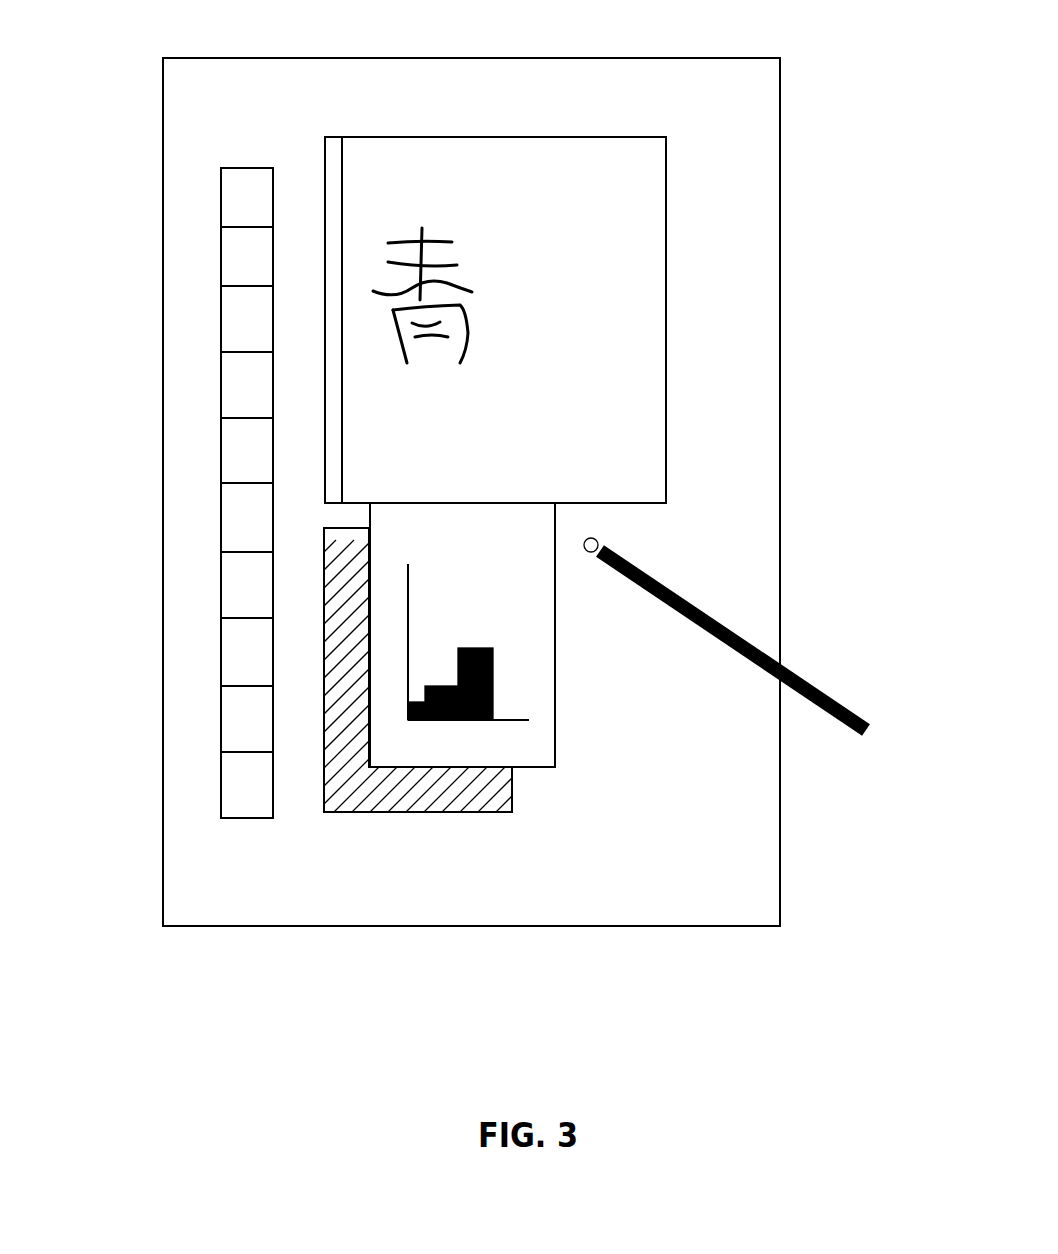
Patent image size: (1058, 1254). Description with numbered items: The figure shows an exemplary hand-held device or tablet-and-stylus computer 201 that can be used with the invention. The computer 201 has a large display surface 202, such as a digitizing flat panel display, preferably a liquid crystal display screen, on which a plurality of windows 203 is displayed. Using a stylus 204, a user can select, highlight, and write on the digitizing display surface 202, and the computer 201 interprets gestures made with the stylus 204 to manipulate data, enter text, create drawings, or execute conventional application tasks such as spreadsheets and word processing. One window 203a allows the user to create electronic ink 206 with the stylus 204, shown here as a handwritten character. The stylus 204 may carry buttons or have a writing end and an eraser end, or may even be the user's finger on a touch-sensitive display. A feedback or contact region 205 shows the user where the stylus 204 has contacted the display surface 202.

The hand-held device or tablet-and-stylus computer 201 is at (120, 805).
The display surface 202 is at (187, 493).
The windows 203 is at (352, 812).
The window 203a is at (630, 448).
The stylus 204 is at (819, 715).
The feedback region or contact region 205 is at (600, 543).
The electronic ink 206 is at (494, 286).